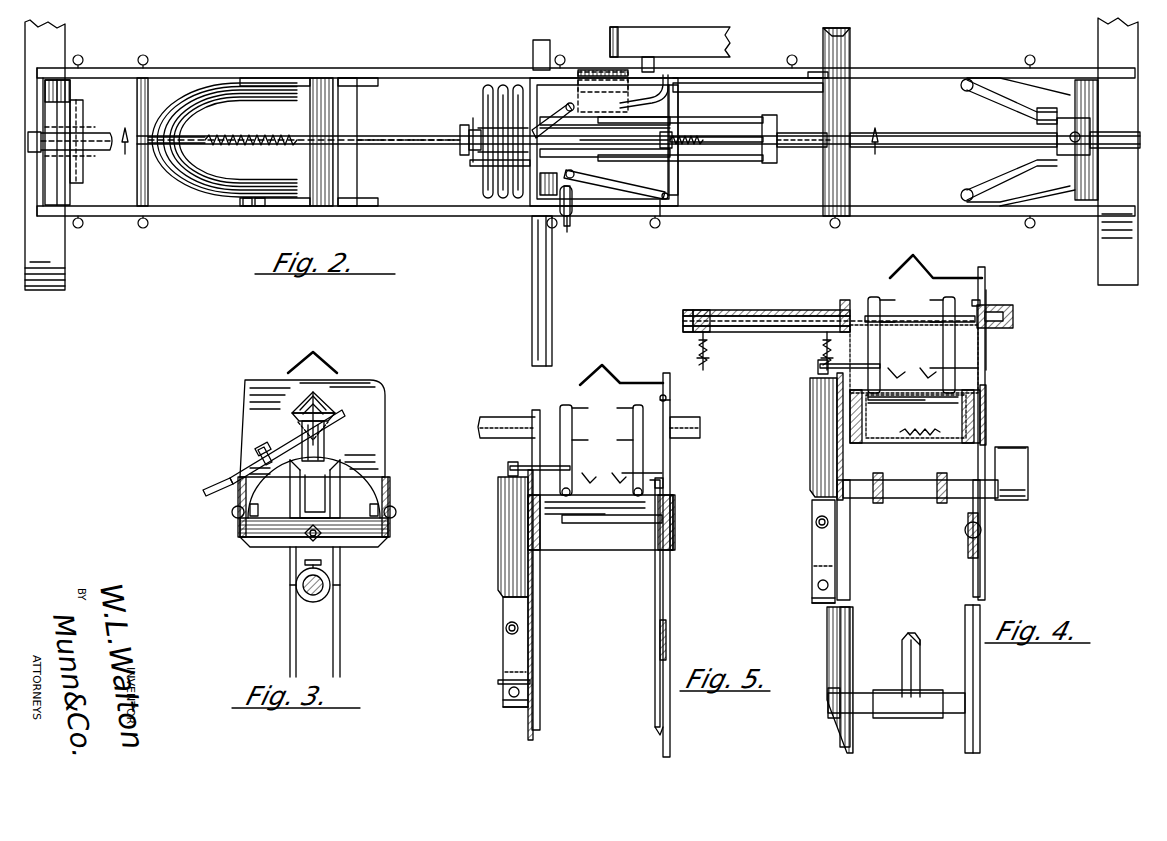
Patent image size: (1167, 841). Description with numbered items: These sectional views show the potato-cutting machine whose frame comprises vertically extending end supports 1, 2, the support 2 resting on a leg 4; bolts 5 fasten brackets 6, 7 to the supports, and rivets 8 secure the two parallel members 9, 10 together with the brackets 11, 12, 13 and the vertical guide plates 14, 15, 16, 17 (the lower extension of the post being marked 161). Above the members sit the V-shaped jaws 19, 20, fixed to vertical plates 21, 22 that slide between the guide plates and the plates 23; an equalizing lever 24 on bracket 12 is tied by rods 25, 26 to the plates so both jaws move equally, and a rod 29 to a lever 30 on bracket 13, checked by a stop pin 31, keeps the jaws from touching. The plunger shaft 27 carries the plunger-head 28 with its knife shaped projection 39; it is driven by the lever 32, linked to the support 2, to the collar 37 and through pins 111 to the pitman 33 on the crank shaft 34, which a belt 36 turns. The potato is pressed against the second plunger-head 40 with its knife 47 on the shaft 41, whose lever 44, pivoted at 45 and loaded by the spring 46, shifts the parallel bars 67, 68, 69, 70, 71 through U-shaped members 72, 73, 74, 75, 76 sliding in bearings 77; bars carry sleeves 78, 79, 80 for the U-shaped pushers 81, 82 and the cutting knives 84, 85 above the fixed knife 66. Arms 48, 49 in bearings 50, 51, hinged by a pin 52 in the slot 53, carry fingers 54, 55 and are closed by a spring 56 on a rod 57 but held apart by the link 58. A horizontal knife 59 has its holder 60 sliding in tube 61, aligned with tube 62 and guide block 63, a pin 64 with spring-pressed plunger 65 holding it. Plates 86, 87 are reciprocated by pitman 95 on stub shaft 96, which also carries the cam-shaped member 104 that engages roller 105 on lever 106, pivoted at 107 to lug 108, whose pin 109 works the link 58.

In FIG. 2, the end support 1 is at (62, 94).
In FIG. 2, the end support 2 is at (1090, 98).
In FIG. 2, the leg 4 is at (1098, 248).
In FIG. 2, the bolt 5 is at (33, 130).
In FIG. 2, the bracket 6 is at (125, 80).
In FIG. 2, the bracket 7 is at (1070, 208).
In FIG. 2, the rivet 8 is at (554, 142).
In FIG. 2, the parallel member 9 is at (394, 68).
In FIG. 3, the parallel member 9 is at (240, 532).
In FIG. 5, the parallel member 9 is at (676, 516).
In FIG. 4, the parallel member 9 is at (988, 416).
In FIG. 2, the parallel member 10 is at (418, 218).
In FIG. 3, the parallel member 10 is at (388, 490).
In FIG. 5, the parallel member 10 is at (528, 540).
In FIG. 4, the parallel member 10 is at (837, 418).
In FIG. 2, the bracket 11 is at (358, 128).
In FIG. 2, the bracket 12 is at (530, 208).
In FIG. 5, the bracket 12 is at (650, 553).
In FIG. 4, the bracket 12 is at (883, 440).
In FIG. 2, the bracket 13 is at (58, 270).
In FIG. 3, the bracket 13 is at (372, 435).
In FIG. 2, the guide plate 14 is at (572, 78).
In FIG. 5, the guide plate 14 is at (672, 404).
In FIG. 2, the guide plate 15 is at (660, 95).
In FIG. 4, the guide plate 15 is at (973, 577).
In FIG. 2, the guide plate 16 is at (535, 218).
In FIG. 5, the guide plate 16 is at (541, 640).
In FIG. 2, the post extension 161 is at (548, 310).
In FIG. 2, the guide plate 17 is at (664, 206).
In FIG. 4, the guide plate 17 is at (848, 556).
In FIG. 3, the jaw 19 is at (326, 364).
In FIG. 5, the jaw 19 is at (610, 374).
In FIG. 4, the jaw 19 is at (918, 268).
In FIG. 2, the jaw 20 is at (720, 120).
In FIG. 3, the jaw 20 is at (300, 490).
In FIG. 5, the jaw 20 is at (654, 470).
In FIG. 4, the jaw 20 is at (933, 365).
In FIG. 2, the vertical plate 21 is at (603, 81).
In FIG. 5, the vertical plate 21 is at (672, 396).
In FIG. 4, the vertical plate 21 is at (986, 290).
In FIG. 5, the vertical plate 22 is at (662, 482).
In FIG. 5, the plate 23 is at (668, 622).
In FIG. 4, the plate 23 is at (970, 553).
In FIG. 2, the equalizing lever 24 is at (602, 98).
In FIG. 5, the equalizing lever 24 is at (665, 486).
In FIG. 4, the equalizing lever 24 is at (976, 303).
In FIG. 2, the rod 25 is at (553, 119).
In FIG. 5, the rod 25 is at (646, 513).
In FIG. 2, the rod 26 is at (638, 95).
In FIG. 5, the rod 26 is at (655, 700).
In FIG. 2, the plunger shaft 27 is at (963, 127).
In FIG. 3, the plunger shaft 27 is at (296, 428).
In FIG. 2, the plunger-head 28 is at (788, 132).
In FIG. 3, the plunger-head 28 is at (318, 400).
In FIG. 2, the rod 29 is at (766, 82).
In FIG. 3, the rod 29 is at (258, 445).
In FIG. 2, the lever 30 is at (818, 97).
In FIG. 3, the lever 30 is at (345, 414).
In FIG. 2, the stop pin 31 is at (812, 72).
In FIG. 3, the stop pin 31 is at (258, 456).
In FIG. 2, the lever 32 is at (1010, 170).
In FIG. 3, the lever 32 is at (333, 632).
In FIG. 3, the pitman 33 is at (325, 578).
In FIG. 4, the crank shaft 34 is at (935, 489).
In FIG. 4, the belt 36 is at (1005, 447).
In FIG. 2, the collar 37 is at (1070, 158).
In FIG. 3, the collar 37 is at (300, 403).
In FIG. 3, the knife shaped projection 39 is at (324, 440).
In FIG. 2, the second plunger-head 40 is at (464, 125).
In FIG. 2, the shaft 41 is at (375, 134).
In FIG. 2, the spring actuated lever 44 is at (251, 132).
In FIG. 2, the pivot 45 is at (137, 186).
In FIG. 2, the spring 46 is at (215, 131).
In FIG. 2, the knife 47 is at (470, 160).
In FIG. 2, the arm 48 is at (625, 190).
In FIG. 5, the arm 48 is at (566, 406).
In FIG. 4, the arm 48 is at (872, 300).
In FIG. 2, the arm 49 is at (624, 139).
In FIG. 5, the arm 49 is at (640, 406).
In FIG. 4, the arm 49 is at (950, 300).
In FIG. 2, the bearing 50 is at (672, 196).
In FIG. 4, the bearing 50 is at (866, 418).
In FIG. 2, the bearing 51 is at (676, 96).
In FIG. 4, the bearing 51 is at (916, 416).
In FIG. 2, the pin 52 is at (671, 143).
In FIG. 4, the pin 52 is at (920, 425).
In FIG. 2, the slot 53 is at (677, 124).
In FIG. 2, the transverse finger 54 is at (547, 184).
In FIG. 5, the transverse finger 54 is at (583, 424).
In FIG. 4, the transverse finger 54 is at (892, 311).
In FIG. 2, the transverse finger 55 is at (605, 133).
In FIG. 5, the transverse finger 55 is at (620, 424).
In FIG. 4, the transverse finger 55 is at (924, 315).
In FIG. 2, the spring 56 is at (568, 216).
In FIG. 2, the rod 57 is at (758, 130).
In FIG. 3, the rod 57 is at (306, 540).
In FIG. 5, the link 58 is at (522, 465).
In FIG. 4, the link 58 is at (857, 363).
In FIG. 4, the knife 59 is at (912, 322).
In FIG. 4, the holder 60 is at (710, 310).
In FIG. 5, the tube 61 is at (510, 408).
In FIG. 4, the tube 61 is at (778, 312).
In FIG. 2, the tube 62 is at (533, 48).
In FIG. 5, the tube 62 is at (700, 426).
In FIG. 4, the tube 62 is at (1002, 305).
In FIG. 4, the guide block 63 is at (1013, 318).
In FIG. 4, the pin 64 is at (706, 364).
In FIG. 4, the spring-pressed plunger 65 is at (742, 329).
In FIG. 2, the knife 66 is at (404, 146).
In FIG. 2, the parallel bar 67 is at (300, 72).
In FIG. 2, the parallel bar 68 is at (280, 78).
In FIG. 2, the parallel bar 69 is at (280, 206).
In FIG. 2, the parallel bar 70 is at (260, 206).
In FIG. 2, the parallel bar 71 is at (247, 206).
In FIG. 2, the U-shaped member 72 is at (235, 90).
In FIG. 2, the U-shaped member 73 is at (210, 102).
In FIG. 2, the U-shaped member 74 is at (205, 170).
In FIG. 2, the U-shaped member 75 is at (218, 176).
In FIG. 2, the U-shaped member 76 is at (195, 192).
In FIG. 2, the bearing 77 is at (354, 78).
In FIG. 2, the sleeve 78 is at (474, 138).
In FIG. 2, the sleeve 79 is at (503, 85).
In FIG. 2, the sleeve 80 is at (516, 200).
In FIG. 2, the U-shaped member 81 is at (486, 85).
In FIG. 2, the U-shaped member 82 is at (500, 170).
In FIG. 2, the cutting knife 84 is at (472, 208).
In FIG. 2, the cutting knife 85 is at (530, 158).
In FIG. 4, the plate 86 is at (966, 632).
In FIG. 4, the plate 87 is at (856, 636).
In FIG. 4, the pitman 95 is at (902, 662).
In FIG. 4, the stub shaft 96 is at (872, 714).
In FIG. 5, the cam-shaped member 104 is at (503, 575).
In FIG. 4, the cam-shaped member 104 is at (815, 460).
In FIG. 5, the roller 105 is at (506, 628).
In FIG. 4, the roller 105 is at (816, 520).
In FIG. 5, the lever 106 is at (505, 646).
In FIG. 4, the lever 106 is at (814, 553).
In FIG. 5, the pivot 107 is at (508, 694).
In FIG. 4, the pivot 107 is at (818, 584).
In FIG. 5, the lug 108 is at (503, 707).
In FIG. 4, the lug 108 is at (812, 600).
In FIG. 2, the pin 109 is at (569, 230).
In FIG. 5, the pin 109 is at (496, 469).
In FIG. 4, the pin 109 is at (818, 370).
In FIG. 2, the pin 111 is at (1054, 110).
In FIG. 3, the pin 111 is at (290, 586).